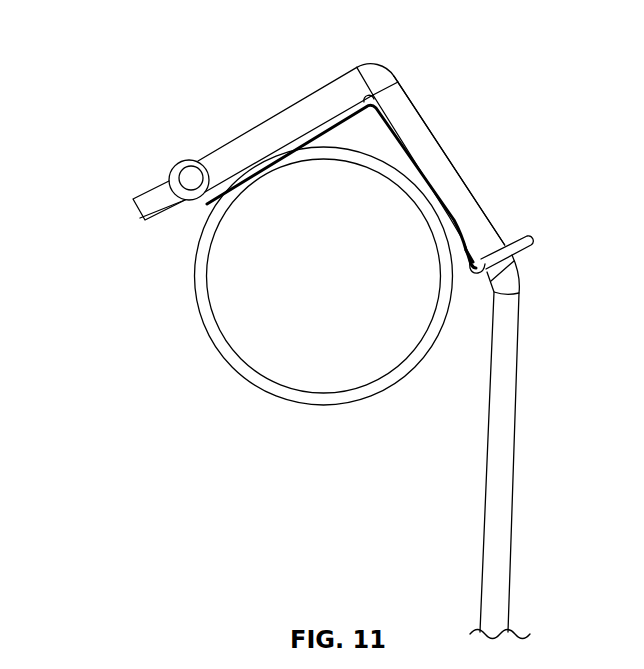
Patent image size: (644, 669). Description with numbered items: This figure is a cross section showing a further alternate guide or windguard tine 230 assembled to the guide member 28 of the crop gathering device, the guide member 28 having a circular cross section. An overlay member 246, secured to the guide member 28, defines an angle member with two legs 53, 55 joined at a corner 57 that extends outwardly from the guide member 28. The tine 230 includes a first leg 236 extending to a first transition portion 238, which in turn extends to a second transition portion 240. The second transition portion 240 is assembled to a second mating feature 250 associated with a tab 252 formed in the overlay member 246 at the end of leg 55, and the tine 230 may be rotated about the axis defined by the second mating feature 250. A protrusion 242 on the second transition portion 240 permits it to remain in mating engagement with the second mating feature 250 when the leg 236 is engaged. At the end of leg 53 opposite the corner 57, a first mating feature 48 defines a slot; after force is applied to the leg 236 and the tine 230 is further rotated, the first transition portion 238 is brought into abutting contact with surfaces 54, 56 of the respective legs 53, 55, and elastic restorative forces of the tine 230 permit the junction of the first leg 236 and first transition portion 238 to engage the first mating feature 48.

The tine 230 is at (125, 55).
The guide member 28 is at (272, 395).
The tab 252 is at (182, 160).
The second mating feature 250 is at (190, 184).
The protrusion 242 is at (140, 197).
The second transition portion 240 is at (178, 215).
The surface 56 is at (312, 122).
The corner 57 is at (380, 73).
The overlay member 246 is at (353, 98).
The surface 54 is at (425, 168).
The first transition portion 238 is at (422, 110).
The leg 55 is at (330, 123).
The leg 53 is at (462, 265).
The first mating feature 48 is at (513, 236).
The first leg 236 is at (510, 588).